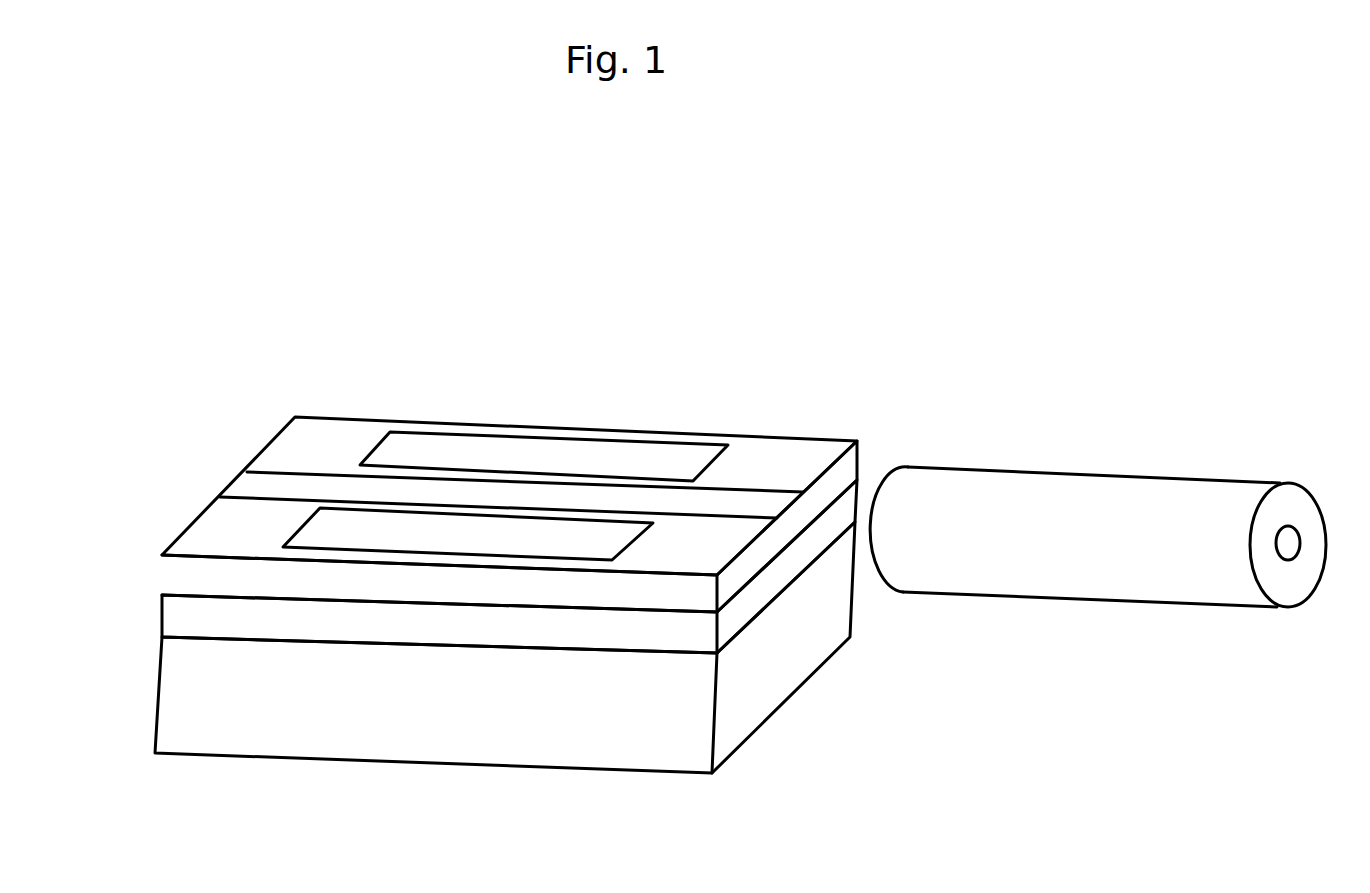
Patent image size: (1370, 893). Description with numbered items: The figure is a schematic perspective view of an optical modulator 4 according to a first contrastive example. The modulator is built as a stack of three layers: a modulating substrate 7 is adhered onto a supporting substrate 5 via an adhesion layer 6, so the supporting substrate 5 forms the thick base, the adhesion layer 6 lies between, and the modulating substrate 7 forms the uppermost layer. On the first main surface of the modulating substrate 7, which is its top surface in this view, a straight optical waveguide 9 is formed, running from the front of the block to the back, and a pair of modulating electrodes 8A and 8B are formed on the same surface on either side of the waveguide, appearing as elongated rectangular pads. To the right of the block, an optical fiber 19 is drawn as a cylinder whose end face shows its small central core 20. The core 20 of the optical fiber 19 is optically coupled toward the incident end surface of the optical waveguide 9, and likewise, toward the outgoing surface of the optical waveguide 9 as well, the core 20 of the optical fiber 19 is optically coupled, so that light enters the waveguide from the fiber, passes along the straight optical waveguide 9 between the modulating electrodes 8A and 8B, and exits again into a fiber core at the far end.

The optical modulator 4 is at (479, 522).
The supporting substrate 5 is at (172, 688).
The adhesion layer 6 is at (172, 618).
The modulating substrate 7 is at (172, 570).
The modulating electrode 8A is at (530, 452).
The modulating electrode 8B is at (530, 545).
The optical waveguide 9 is at (778, 500).
The optical fiber 19 is at (1116, 483).
The core 20 is at (1290, 543).